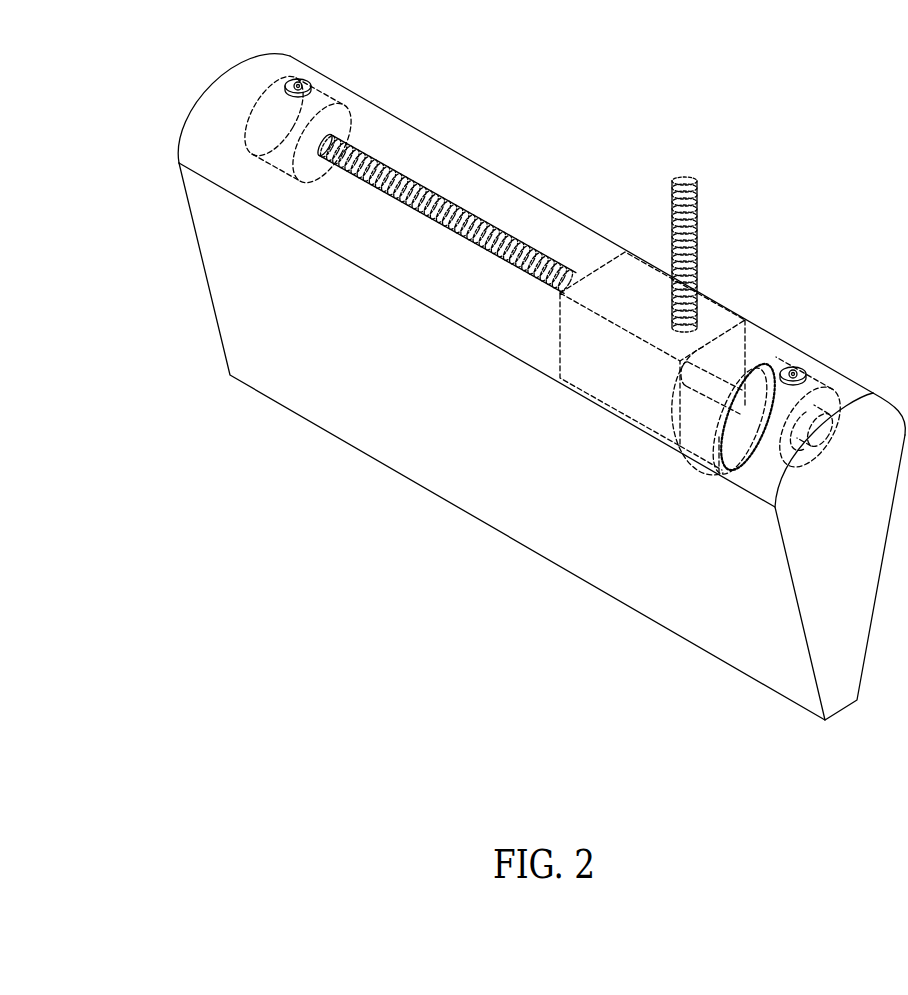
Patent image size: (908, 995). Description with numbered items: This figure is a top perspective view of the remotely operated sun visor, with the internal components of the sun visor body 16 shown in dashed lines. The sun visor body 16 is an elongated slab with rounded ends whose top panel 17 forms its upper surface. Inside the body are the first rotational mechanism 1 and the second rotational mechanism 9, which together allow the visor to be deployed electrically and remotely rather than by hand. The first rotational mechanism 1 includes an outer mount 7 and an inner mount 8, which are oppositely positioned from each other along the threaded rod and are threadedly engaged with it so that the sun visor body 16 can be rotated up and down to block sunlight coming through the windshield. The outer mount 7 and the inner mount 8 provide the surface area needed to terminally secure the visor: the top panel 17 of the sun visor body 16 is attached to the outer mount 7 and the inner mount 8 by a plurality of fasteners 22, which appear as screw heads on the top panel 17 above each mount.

The first rotational mechanism 1 is at (727, 490).
The outer mount 7 is at (805, 455).
The inner mount 8 is at (257, 147).
The second rotational mechanism 9 is at (552, 352).
The sun visor body 16 is at (205, 355).
The top panel 17 is at (488, 172).
The fasteners 22 is at (296, 79).